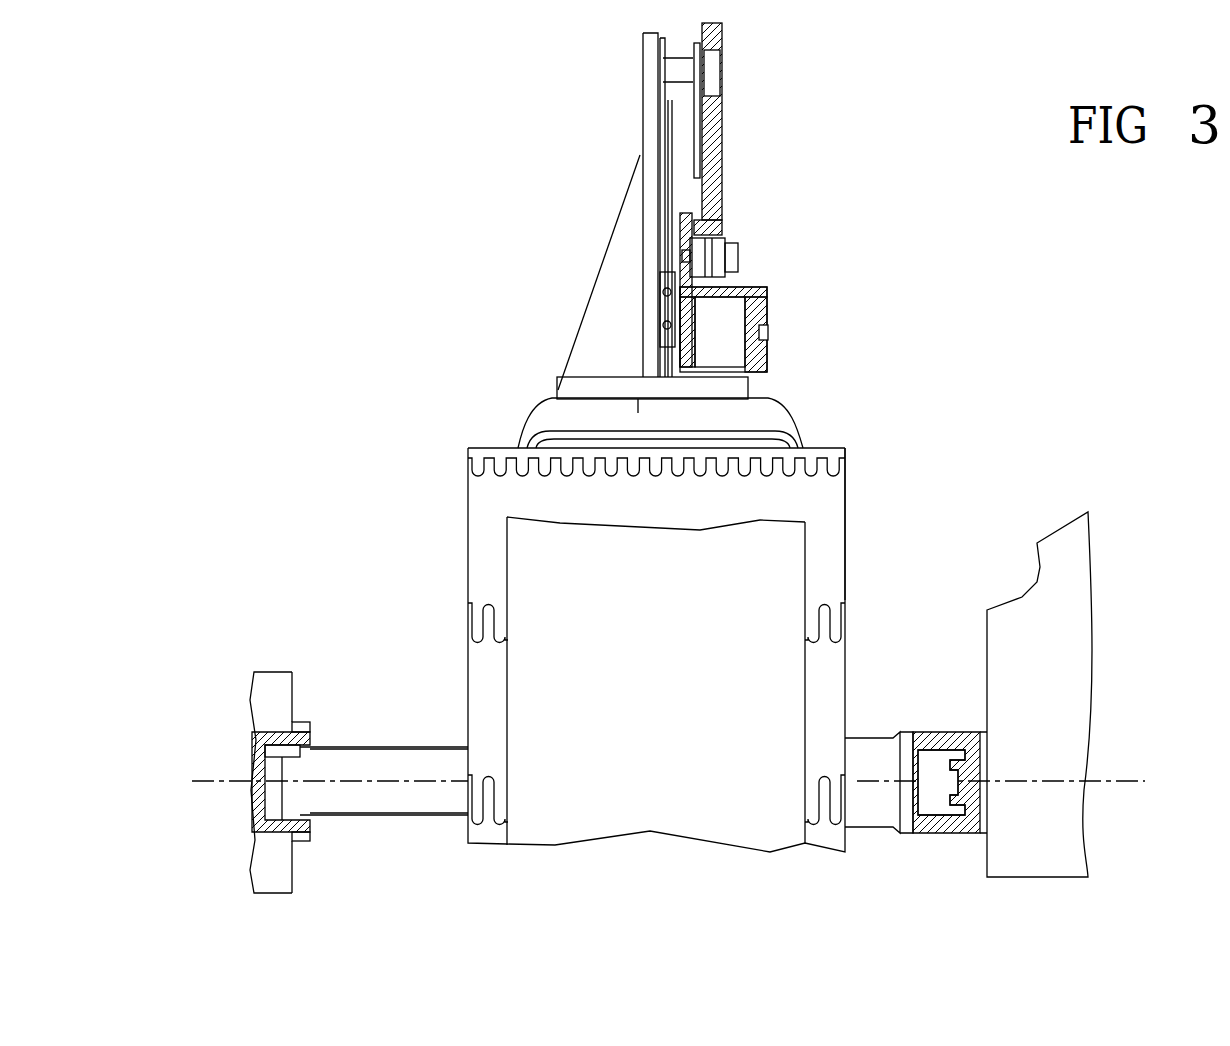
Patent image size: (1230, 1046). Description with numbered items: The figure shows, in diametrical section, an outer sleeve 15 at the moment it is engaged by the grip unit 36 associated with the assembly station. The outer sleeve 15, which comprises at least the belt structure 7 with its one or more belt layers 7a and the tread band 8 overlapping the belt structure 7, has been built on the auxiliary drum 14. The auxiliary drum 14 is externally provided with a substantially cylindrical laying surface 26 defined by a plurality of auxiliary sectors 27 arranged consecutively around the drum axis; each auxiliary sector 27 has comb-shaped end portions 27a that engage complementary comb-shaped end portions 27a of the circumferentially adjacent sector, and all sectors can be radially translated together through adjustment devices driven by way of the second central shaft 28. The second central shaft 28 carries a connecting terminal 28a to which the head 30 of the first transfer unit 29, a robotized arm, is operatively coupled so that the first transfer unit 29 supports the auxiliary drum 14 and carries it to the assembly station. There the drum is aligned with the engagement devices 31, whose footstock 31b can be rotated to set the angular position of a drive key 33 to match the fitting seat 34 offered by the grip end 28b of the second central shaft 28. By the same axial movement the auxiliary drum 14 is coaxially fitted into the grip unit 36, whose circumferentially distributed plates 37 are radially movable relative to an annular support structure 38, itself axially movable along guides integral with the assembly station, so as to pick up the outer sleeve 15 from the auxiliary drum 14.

The belt structure 7 is at (542, 427).
The belt layers 7a is at (613, 440).
The tread band 8 is at (638, 410).
The auxiliary drum 14 is at (848, 445).
The outer sleeve 15 is at (808, 420).
The laying surface 26 is at (491, 448).
The auxiliary sectors 27 is at (838, 540).
The comb-shaped end portions 27a is at (502, 607).
The second central shaft 28 is at (445, 800).
The connecting terminal 28a is at (938, 765).
The grip end 28b is at (320, 760).
The first transfer unit 29 is at (1092, 572).
The head 30 is at (945, 828).
The engagement devices 31 is at (262, 660).
The footstock 31b is at (302, 722).
The drive key 33 is at (288, 775).
The fitting seat 34 is at (258, 764).
The grip unit 36 is at (730, 113).
The plates 37 is at (677, 387).
The annular support structure 38 is at (767, 295).